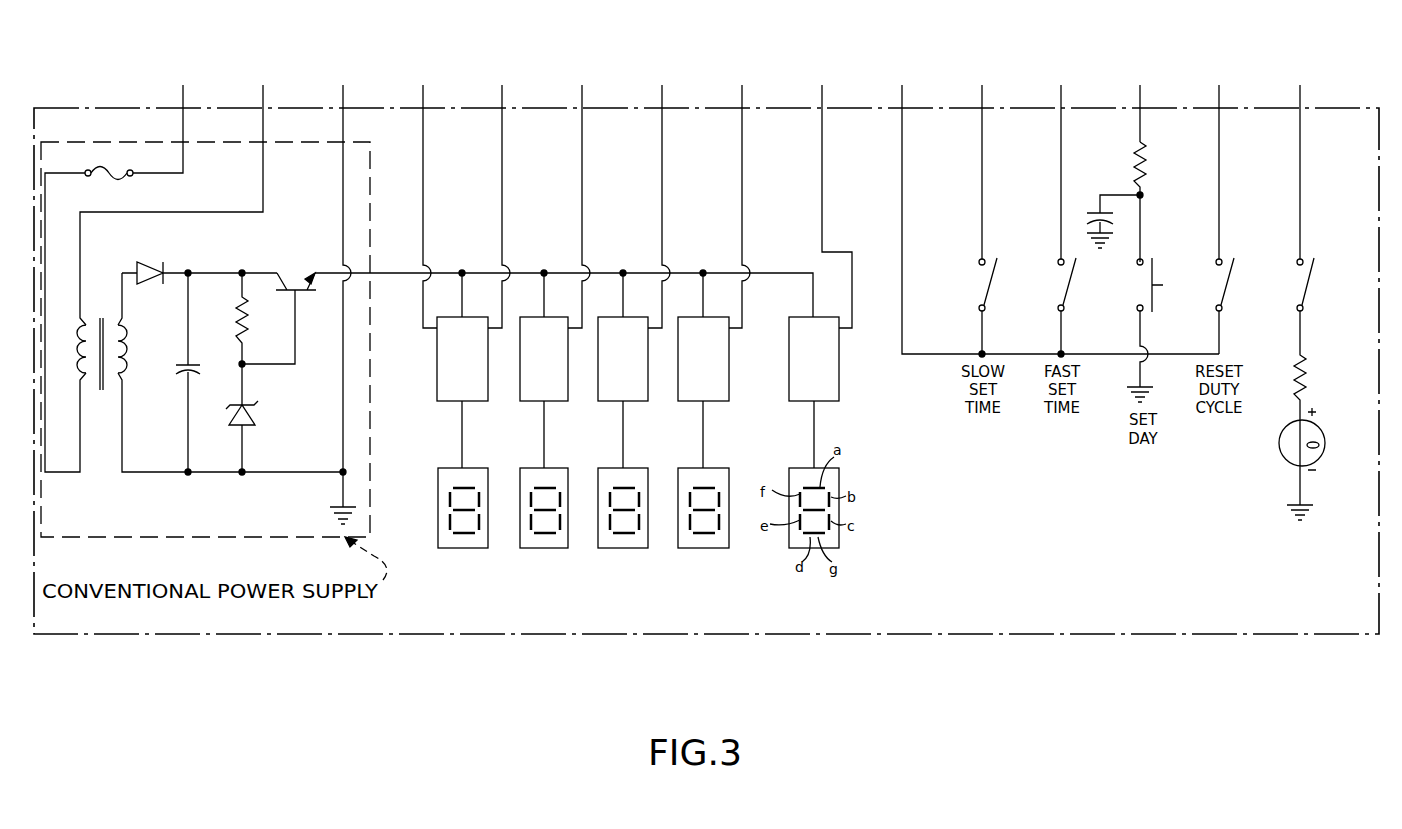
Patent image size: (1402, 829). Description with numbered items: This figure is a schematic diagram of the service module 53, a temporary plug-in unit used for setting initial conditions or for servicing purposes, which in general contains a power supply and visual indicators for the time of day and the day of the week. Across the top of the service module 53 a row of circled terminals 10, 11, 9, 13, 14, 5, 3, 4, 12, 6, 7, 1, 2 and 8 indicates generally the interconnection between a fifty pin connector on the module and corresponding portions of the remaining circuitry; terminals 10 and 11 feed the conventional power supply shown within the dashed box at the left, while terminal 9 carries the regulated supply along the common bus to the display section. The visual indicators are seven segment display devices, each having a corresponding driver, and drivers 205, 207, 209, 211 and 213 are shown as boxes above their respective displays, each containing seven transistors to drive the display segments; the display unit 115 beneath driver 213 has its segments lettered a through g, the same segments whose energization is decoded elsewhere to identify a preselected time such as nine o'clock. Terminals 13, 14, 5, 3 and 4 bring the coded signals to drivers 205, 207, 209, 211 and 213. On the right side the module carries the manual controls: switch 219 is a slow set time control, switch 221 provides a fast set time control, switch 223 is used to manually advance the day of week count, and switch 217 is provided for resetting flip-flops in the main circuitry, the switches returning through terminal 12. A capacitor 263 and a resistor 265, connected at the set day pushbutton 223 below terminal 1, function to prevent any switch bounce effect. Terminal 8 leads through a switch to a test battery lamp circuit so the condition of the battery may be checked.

The service module 53 is at (1357, 107).
The display unit 115 is at (478, 561).
The driver 205 is at (445, 401).
The driver 207 is at (530, 401).
The driver 209 is at (606, 401).
The driver 211 is at (685, 401).
The driver 213 is at (798, 401).
The switch 217 is at (1236, 292).
The switch 219 is at (992, 292).
The switch 221 is at (1072, 292).
The switch 223 is at (1158, 293).
The capacitor 263 is at (1088, 207).
The resistor 265 is at (1145, 170).
The terminal 1 is at (1140, 225).
The terminal 2 is at (1219, 154).
The terminal 3 is at (702, 188).
The terminal 4 is at (828, 188).
The terminal 5 is at (582, 188).
The terminal 6 is at (982, 154).
The terminal 7 is at (1061, 154).
The terminal 8 is at (1329, 284).
The terminal 9 is at (343, 286).
The terminal 10 is at (123, 260).
The terminal 11 is at (180, 187).
The terminal 12 is at (1051, 203).
The terminal 13 is at (423, 188).
The terminal 14 is at (502, 188).